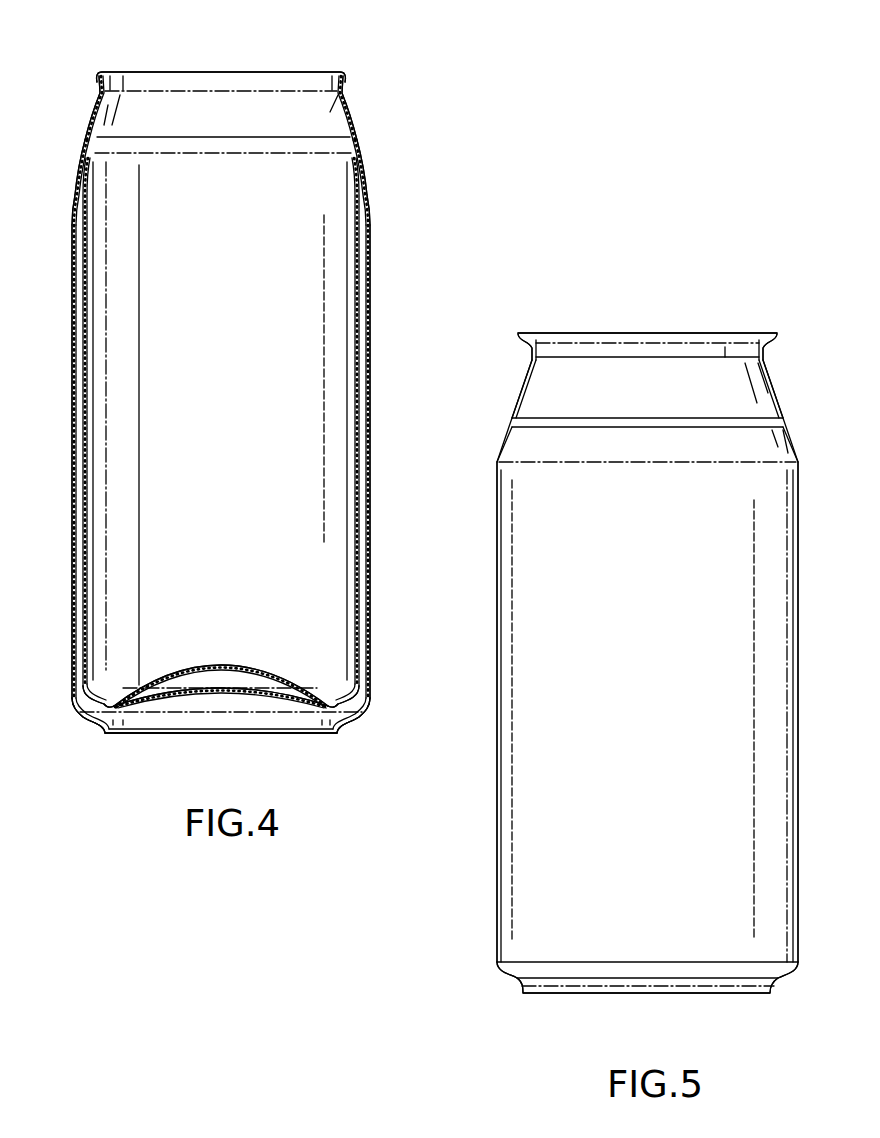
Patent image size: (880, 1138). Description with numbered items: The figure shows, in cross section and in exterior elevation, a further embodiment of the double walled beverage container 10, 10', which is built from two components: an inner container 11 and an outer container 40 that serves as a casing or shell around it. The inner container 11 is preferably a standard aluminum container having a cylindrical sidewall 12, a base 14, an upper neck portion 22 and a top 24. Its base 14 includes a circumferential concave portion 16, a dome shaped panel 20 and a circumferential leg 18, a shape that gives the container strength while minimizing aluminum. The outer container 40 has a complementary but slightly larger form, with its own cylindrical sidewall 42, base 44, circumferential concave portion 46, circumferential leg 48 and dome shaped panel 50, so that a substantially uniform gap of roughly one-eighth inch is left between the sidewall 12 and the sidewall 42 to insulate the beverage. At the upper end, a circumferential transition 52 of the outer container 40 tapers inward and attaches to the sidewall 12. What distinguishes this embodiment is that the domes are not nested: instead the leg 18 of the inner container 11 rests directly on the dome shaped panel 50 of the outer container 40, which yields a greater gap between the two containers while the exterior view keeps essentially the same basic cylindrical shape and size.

In FIG. 4, the double walled beverage container 10 is at (298, 402).
In FIG. 5, the double walled beverage container 10' is at (647, 604).
In FIG. 5, the inner container 11 is at (790, 356).
In FIG. 4, the sidewall 12 is at (88, 337).
In FIG. 4, the base 14 is at (242, 634).
In FIG. 4, the circumferential concave portion 16 is at (97, 687).
In FIG. 4, the circumferential leg 18 is at (112, 707).
In FIG. 4, the dome shaped panel 20 is at (192, 665).
In FIG. 4, the upper neck portion 22 is at (101, 104).
In FIG. 5, the upper neck portion 22 is at (520, 382).
In FIG. 4, the top 24 is at (276, 59).
In FIG. 5, the top 24 is at (675, 320).
In FIG. 5, the outer container 40 is at (824, 660).
In FIG. 4, the sidewall 42 is at (73, 292).
In FIG. 5, the sidewall 42 is at (633, 665).
In FIG. 4, the base 44 is at (184, 752).
In FIG. 5, the base 44 is at (556, 1016).
In FIG. 4, the circumferential concave portion 46 is at (82, 718).
In FIG. 4, the circumferential leg 48 is at (105, 735).
In FIG. 4, the dome shaped panel 50 is at (243, 703).
In FIG. 4, the circumferential transition 52 is at (74, 180).
In FIG. 5, the circumferential transition 52 is at (547, 425).